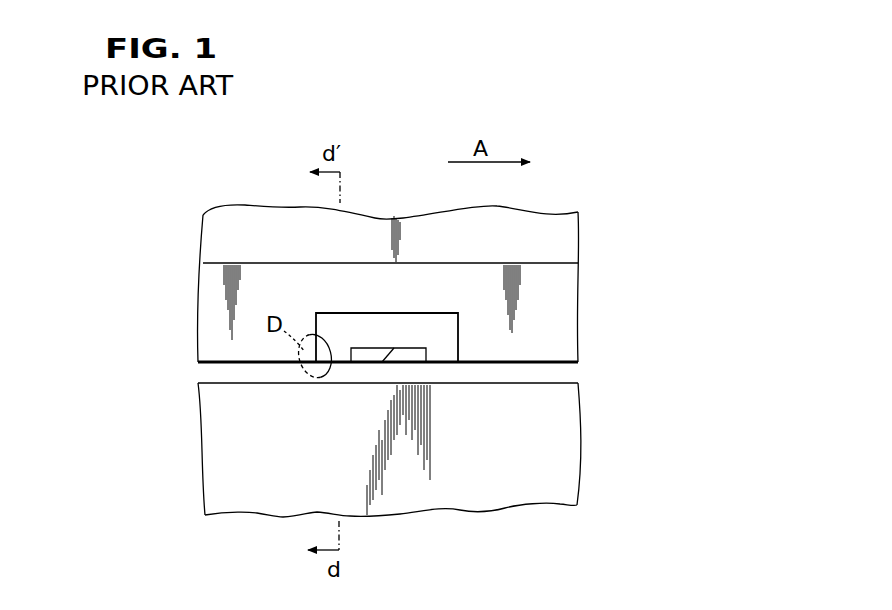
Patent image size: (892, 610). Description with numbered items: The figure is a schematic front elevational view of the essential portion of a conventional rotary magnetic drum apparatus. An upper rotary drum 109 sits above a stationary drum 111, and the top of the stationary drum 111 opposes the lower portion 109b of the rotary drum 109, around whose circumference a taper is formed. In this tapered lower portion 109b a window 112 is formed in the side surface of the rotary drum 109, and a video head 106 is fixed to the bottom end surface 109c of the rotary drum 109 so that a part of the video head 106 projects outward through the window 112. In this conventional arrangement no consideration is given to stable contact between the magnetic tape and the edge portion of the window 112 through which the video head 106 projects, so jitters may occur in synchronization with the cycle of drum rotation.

The rotary drum 109 is at (578, 240).
The lower portion of the rotary drum 109b is at (573, 322).
The bottom end surface of the rotary drum 109c is at (568, 364).
The stationary drum 111 is at (582, 462).
The window 112 is at (376, 318).
The video head 106 is at (411, 330).